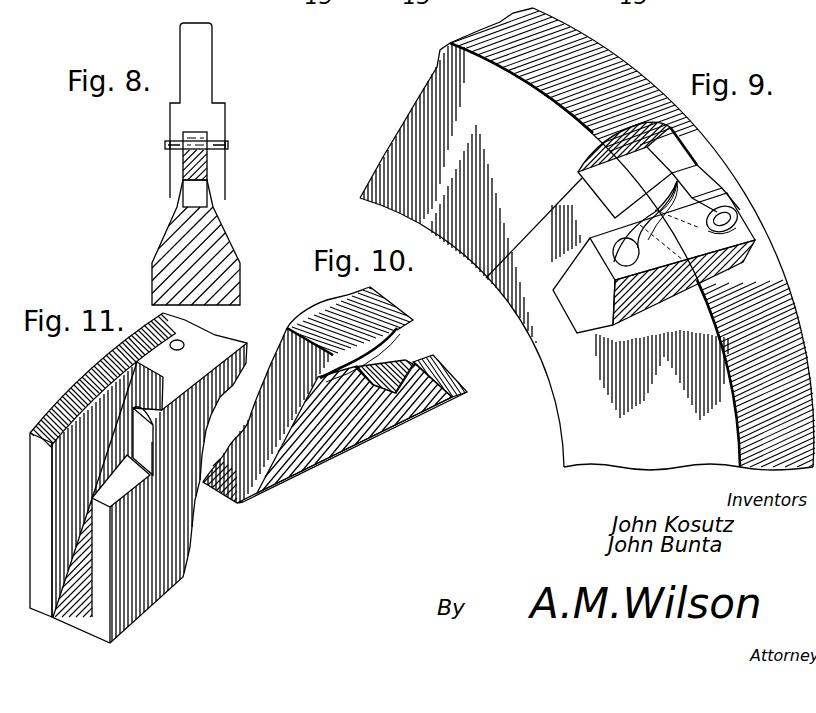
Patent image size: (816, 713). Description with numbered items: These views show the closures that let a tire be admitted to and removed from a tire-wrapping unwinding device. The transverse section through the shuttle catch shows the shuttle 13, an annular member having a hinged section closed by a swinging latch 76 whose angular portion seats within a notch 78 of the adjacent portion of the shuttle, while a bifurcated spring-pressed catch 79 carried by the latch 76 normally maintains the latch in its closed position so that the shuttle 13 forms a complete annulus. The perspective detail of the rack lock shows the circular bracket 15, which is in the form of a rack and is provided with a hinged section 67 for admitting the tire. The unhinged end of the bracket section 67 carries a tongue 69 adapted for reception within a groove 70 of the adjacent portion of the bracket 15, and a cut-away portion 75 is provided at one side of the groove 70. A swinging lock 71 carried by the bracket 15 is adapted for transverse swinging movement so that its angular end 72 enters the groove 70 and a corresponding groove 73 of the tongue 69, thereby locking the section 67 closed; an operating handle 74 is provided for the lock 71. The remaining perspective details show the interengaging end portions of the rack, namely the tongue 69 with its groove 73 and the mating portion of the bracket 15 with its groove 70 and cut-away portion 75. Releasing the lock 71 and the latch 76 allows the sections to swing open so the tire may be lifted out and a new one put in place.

In FIG. 8, the shuttle 13 is at (200, 240).
In FIG. 9, the circular bracket 15 is at (586, 239).
In FIG. 11, the circular bracket 15 is at (173, 567).
In FIG. 9, the hinged section 67 is at (485, 226).
In FIG. 10, the hinged section 67 is at (288, 340).
In FIG. 9, the tongue 69 is at (693, 190).
In FIG. 10, the tongue 69 is at (432, 390).
In FIG. 11, the groove 70 is at (63, 403).
In FIG. 9, the swinging lock 71 is at (656, 223).
In FIG. 9, the angular end 72 is at (654, 263).
In FIG. 9, the groove 73 is at (659, 170).
In FIG. 10, the groove 73 is at (382, 370).
In FIG. 9, the operating handle 74 is at (710, 222).
In FIG. 9, the cut-away portion 75 is at (603, 188).
In FIG. 11, the cut-away portion 75 is at (117, 490).
In FIG. 8, the swinging latch 76 is at (207, 157).
In FIG. 8, the notch 78 is at (177, 203).
In FIG. 8, the bifurcated spring-pressed catch 79 is at (207, 190).